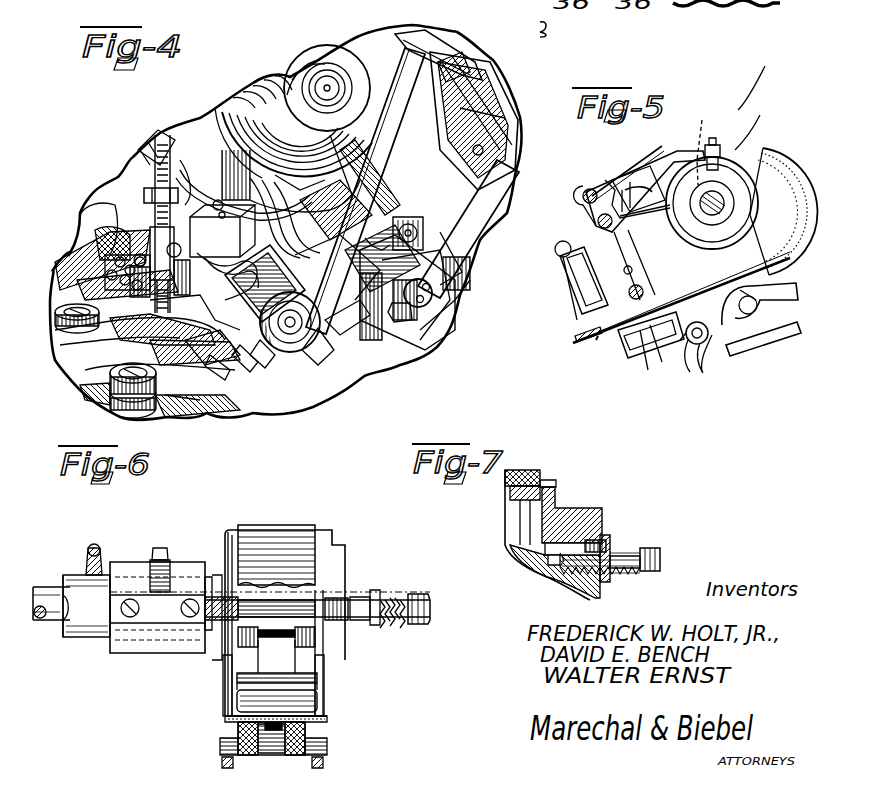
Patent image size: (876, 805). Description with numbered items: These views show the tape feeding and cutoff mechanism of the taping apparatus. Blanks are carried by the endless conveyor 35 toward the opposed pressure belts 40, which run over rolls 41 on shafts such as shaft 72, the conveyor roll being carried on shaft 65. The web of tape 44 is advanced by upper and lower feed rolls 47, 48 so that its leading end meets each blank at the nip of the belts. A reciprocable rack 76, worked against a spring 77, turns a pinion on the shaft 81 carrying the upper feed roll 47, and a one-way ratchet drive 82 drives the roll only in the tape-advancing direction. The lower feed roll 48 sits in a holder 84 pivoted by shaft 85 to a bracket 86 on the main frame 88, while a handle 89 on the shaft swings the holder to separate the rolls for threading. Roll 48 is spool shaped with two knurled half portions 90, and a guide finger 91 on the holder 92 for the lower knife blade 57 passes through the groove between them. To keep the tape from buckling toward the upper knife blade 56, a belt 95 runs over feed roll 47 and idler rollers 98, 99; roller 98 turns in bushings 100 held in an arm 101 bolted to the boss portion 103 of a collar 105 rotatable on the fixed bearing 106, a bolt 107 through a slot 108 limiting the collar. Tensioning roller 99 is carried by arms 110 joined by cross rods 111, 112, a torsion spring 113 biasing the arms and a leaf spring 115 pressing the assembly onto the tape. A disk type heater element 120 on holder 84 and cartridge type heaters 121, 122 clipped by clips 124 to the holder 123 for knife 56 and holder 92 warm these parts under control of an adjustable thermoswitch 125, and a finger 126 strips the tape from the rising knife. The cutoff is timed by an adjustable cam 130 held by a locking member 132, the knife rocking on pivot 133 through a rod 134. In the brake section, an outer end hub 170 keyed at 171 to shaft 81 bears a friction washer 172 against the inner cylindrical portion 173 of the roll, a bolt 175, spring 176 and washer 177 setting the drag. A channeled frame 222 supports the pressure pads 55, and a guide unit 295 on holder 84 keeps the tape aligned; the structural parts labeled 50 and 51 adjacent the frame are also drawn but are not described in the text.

In FIG. 4, the endless conveyor 35 is at (78, 277).
In FIG. 4, the pressure belts 40 is at (75, 378).
In FIG. 4, the rolls 41 is at (180, 405).
In FIG. 4, the web of tape 44 is at (392, 178).
In FIG. 5, the web of tape 44 is at (577, 340).
In FIG. 6, the web of tape 44 is at (225, 716).
In FIG. 4, the upper feed roll 47 is at (320, 350).
In FIG. 5, the upper feed roll 47 is at (762, 148).
In FIG. 6, the upper feed roll 47 is at (325, 537).
In FIG. 7, the upper feed roll 47 is at (545, 478).
In FIG. 4, the lower feed roll 48 is at (270, 350).
In FIG. 5, the lower feed roll 48 is at (738, 300).
In FIG. 6, the lower feed roll 48 is at (306, 744).
In FIG. 4, the frame 50 is at (512, 90).
In FIG. 4, the frame face 51 is at (505, 118).
In FIG. 4, the pressure pads 55 is at (452, 60).
In FIG. 4, the upper knife blade 56 is at (200, 370).
In FIG. 5, the upper knife blade 56 is at (590, 315).
In FIG. 4, the lower knife blade 57 is at (250, 365).
In FIG. 5, the lower knife blade 57 is at (630, 340).
In FIG. 4, the shaft 65 is at (92, 218).
In FIG. 4, the shaft 72 is at (100, 268).
In FIG. 4, the reciprocable rack 76 is at (140, 165).
In FIG. 4, the spring 77 is at (165, 135).
In FIG. 6, the shaft 81 is at (45, 615).
In FIG. 7, the shaft 81 is at (530, 558).
In FIG. 5, the one-way ratchet drive 82 is at (798, 180).
In FIG. 4, the holder 84 is at (340, 325).
In FIG. 5, the holder 84 is at (783, 340).
In FIG. 4, the shaft 85 is at (462, 275).
In FIG. 4, the bracket 86 is at (400, 340).
In FIG. 4, the main frame 88 is at (455, 318).
In FIG. 4, the handle 89 is at (475, 220).
In FIG. 6, the knurled half portions 90 is at (220, 745).
In FIG. 5, the guide finger 91 is at (787, 288).
In FIG. 6, the guide finger 91 is at (327, 720).
In FIG. 5, the holder 92 is at (643, 355).
In FIG. 4, the belt 95 is at (300, 265).
In FIG. 5, the belt 95 is at (640, 190).
In FIG. 6, the belt 95 is at (300, 527).
In FIG. 7, the belt 95 is at (520, 470).
In FIG. 5, the idler roller 98 is at (582, 194).
In FIG. 6, the idler roller 98 is at (258, 600).
In FIG. 5, the tensioning roller 99 is at (655, 345).
In FIG. 6, the tensioning roller 99 is at (318, 695).
In FIG. 6, the bushings 100 is at (360, 608).
In FIG. 5, the arm 101 is at (612, 190).
In FIG. 6, the arm 101 is at (150, 615).
In FIG. 5, the boss portion 103 is at (625, 170).
In FIG. 5, the collar 105 is at (732, 165).
In FIG. 6, the collar 105 is at (125, 560).
In FIG. 5, the fixed bearing 106 is at (714, 137).
In FIG. 6, the fixed bearing 106 is at (85, 640).
In FIG. 5, the bolt 107 is at (722, 145).
In FIG. 6, the bolt 107 is at (160, 548).
In FIG. 5, the slot 108 is at (702, 120).
In FIG. 5, the arms 110 is at (577, 308).
In FIG. 6, the arms 110 is at (228, 690).
In FIG. 5, the cross rod 111 is at (597, 219).
In FIG. 6, the cross rod 111 is at (285, 630).
In FIG. 5, the cross rod 112 is at (660, 268).
In FIG. 6, the cross rod 112 is at (300, 695).
In FIG. 5, the torsion spring 113 is at (655, 206).
In FIG. 6, the torsion spring 113 is at (320, 675).
In FIG. 5, the leaf spring 115 is at (660, 150).
In FIG. 6, the leaf spring 115 is at (200, 570).
In FIG. 4, the disk type heater element 120 is at (300, 352).
In FIG. 5, the cartridge type heater 121 is at (555, 250).
In FIG. 5, the cartridge type heater 122 is at (690, 360).
In FIG. 4, the holder 123 is at (200, 352).
In FIG. 5, the holder 123 is at (568, 275).
In FIG. 5, the clips 124 is at (700, 345).
In FIG. 4, the adjustable thermoswitch 125 is at (398, 330).
In FIG. 4, the finger 126 is at (218, 370).
In FIG. 5, the finger 126 is at (612, 338).
In FIG. 4, the adjustable cam 130 is at (235, 95).
In FIG. 4, the locking member 132 is at (360, 68).
In FIG. 4, the pivot 133 is at (75, 352).
In FIG. 4, the rod 134 is at (95, 235).
In FIG. 7, the outer end hub 170 is at (590, 510).
In FIG. 7, the key 171 is at (610, 525).
In FIG. 7, the friction washer 172 is at (560, 480).
In FIG. 7, the inner cylindrical portion 173 is at (508, 508).
In FIG. 7, the bolt 175 is at (660, 555).
In FIG. 7, the spring 176 is at (620, 575).
In FIG. 7, the washer 177 is at (605, 545).
In FIG. 4, the channeled frame 222 is at (480, 58).
In FIG. 4, the guide unit 295 is at (357, 185).